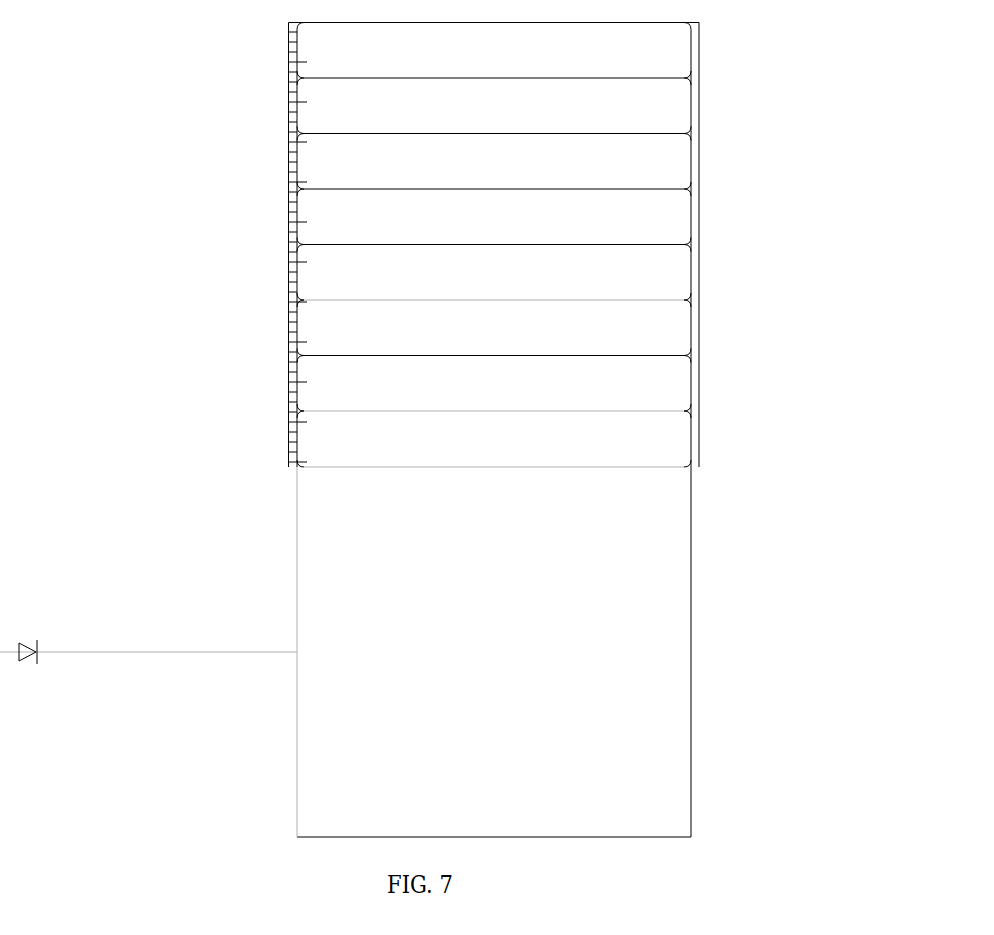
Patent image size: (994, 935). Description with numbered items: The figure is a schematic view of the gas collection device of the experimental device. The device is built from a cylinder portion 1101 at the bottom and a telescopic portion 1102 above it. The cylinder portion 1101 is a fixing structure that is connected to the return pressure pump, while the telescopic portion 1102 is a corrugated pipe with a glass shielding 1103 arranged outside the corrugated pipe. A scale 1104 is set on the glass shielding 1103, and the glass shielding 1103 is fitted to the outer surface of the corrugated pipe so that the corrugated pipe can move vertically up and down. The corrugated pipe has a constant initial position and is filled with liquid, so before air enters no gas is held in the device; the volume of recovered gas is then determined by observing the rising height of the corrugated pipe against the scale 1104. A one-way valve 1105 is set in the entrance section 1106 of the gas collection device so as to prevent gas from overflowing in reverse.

The cylinder portion 1101 is at (680, 700).
The telescopic portion 1102 is at (591, 266).
The glass shielding 1103 is at (701, 168).
The scale 1104 is at (290, 232).
The one-way valve 1105 is at (30, 644).
The entrance section 1106 is at (285, 648).